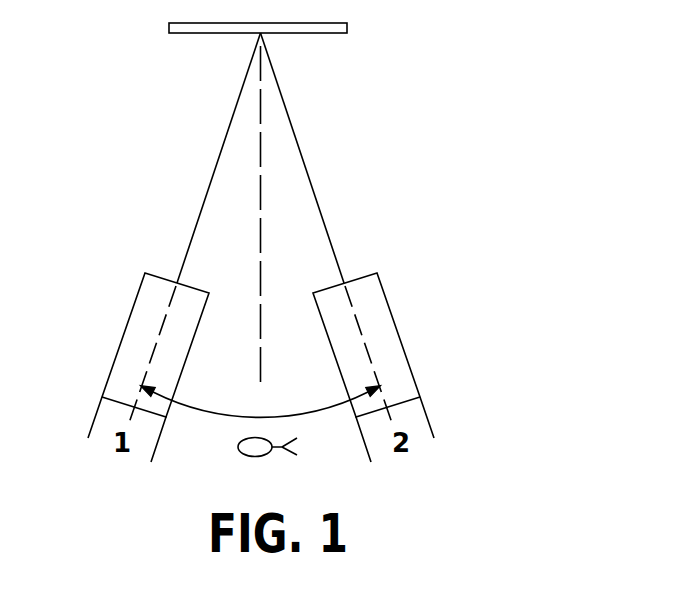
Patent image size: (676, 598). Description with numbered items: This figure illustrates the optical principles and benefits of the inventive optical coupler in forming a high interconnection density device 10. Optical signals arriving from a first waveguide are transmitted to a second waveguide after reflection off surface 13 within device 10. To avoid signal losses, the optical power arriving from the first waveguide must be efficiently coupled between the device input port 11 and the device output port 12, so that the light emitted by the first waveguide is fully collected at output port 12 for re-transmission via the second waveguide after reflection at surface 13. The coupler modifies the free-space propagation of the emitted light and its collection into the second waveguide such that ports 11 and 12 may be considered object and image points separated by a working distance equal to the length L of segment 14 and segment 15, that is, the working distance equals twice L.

The high interconnection density device 10 is at (478, 282).
The device input port 11 is at (178, 282).
The device output port 12 is at (347, 282).
The surface 13 is at (195, 33).
The segment 14 is at (214, 168).
The segment 15 is at (300, 145).